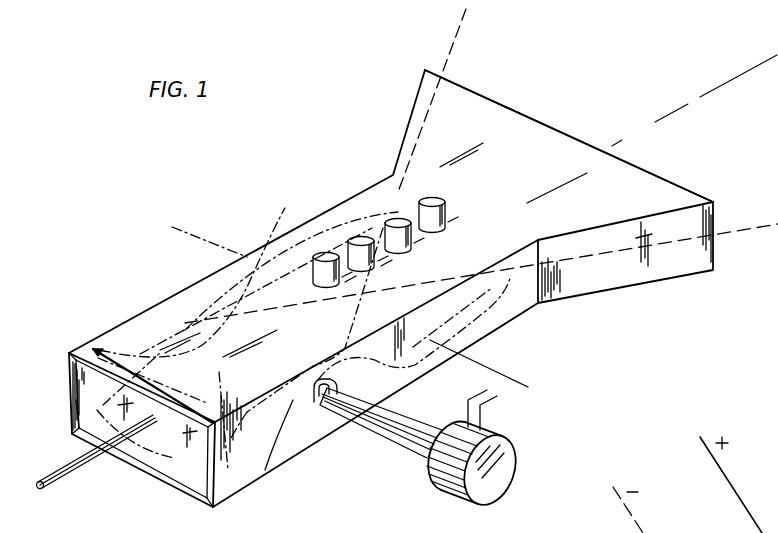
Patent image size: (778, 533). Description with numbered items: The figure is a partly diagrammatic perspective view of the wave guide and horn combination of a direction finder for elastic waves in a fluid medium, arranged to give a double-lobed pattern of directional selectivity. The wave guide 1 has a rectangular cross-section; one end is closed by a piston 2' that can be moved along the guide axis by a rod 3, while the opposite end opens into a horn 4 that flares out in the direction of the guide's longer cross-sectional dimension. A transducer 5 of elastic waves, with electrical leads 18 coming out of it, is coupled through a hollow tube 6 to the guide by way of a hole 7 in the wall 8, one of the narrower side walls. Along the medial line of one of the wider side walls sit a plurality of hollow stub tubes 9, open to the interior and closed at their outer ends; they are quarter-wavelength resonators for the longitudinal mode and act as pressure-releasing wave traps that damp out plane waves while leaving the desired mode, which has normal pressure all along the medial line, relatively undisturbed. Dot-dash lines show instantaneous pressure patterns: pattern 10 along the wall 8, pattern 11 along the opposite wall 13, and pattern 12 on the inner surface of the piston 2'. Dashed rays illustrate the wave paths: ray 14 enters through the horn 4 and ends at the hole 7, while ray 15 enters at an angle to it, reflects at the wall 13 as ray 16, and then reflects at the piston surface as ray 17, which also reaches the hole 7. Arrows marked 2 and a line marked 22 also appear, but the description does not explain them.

The wave guide 1 is at (259, 250).
The section plane 2 is at (350, 283).
The piston 2' is at (127, 384).
The rod 3 is at (73, 470).
The horn 4 is at (532, 123).
The transducer 5 is at (505, 447).
The hollow tube 6 is at (388, 412).
The hole 7 is at (341, 386).
The wall 8 is at (518, 329).
The hollow stub tubes 9 is at (430, 201).
The pressure pattern 10 is at (275, 442).
The pressure pattern 11 is at (232, 317).
The pressure pattern 12 is at (167, 455).
The wall 13 is at (70, 418).
The ray 14 is at (448, 48).
The ray 15 is at (746, 233).
The ray 16 is at (173, 368).
The ray 17 is at (222, 400).
The electrical leads 18 is at (492, 392).
The reference line 22 is at (730, 481).